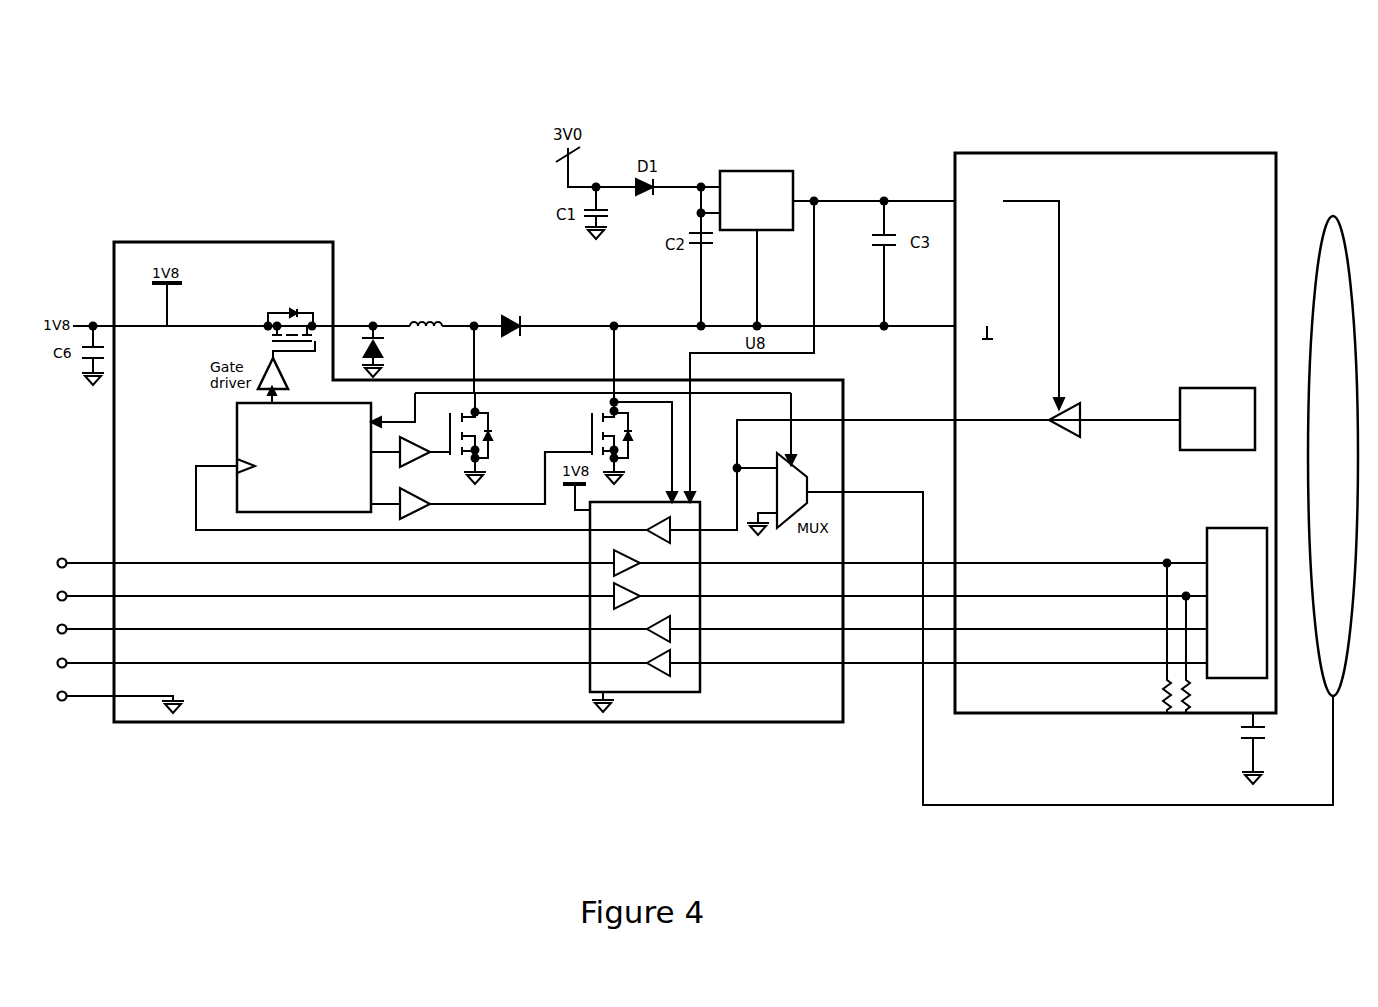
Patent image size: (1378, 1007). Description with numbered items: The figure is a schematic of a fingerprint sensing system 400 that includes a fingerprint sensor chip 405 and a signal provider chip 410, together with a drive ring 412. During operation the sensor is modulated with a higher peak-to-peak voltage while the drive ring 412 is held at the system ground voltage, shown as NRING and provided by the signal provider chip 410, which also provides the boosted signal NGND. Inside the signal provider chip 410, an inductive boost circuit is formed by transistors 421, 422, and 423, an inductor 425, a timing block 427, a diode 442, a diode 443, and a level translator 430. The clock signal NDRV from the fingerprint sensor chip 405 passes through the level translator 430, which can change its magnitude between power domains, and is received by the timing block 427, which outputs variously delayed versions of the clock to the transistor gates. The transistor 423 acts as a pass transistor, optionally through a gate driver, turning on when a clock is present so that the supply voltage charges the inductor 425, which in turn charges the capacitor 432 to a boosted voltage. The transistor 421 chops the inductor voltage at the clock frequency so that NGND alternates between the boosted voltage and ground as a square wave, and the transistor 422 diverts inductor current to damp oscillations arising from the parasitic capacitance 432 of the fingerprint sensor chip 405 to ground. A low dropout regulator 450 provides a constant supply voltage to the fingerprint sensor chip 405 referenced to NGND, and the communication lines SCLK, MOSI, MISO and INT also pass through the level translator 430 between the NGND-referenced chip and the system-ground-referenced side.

The fingerprint sensing system 400 is at (1221, 57).
The fingerprint sensor chip 405 is at (1092, 713).
The signal provider chip 410 is at (285, 242).
The drive ring 412 is at (1333, 456).
The transistor 421 is at (583, 425).
The transistor 422 is at (450, 462).
The transistor 423 is at (282, 312).
The inductor 425 is at (441, 320).
The timing block 427 is at (307, 457).
The level translator 430 is at (700, 680).
The capacitor 432 is at (1240, 740).
The diode 442 is at (385, 348).
The diode 443 is at (515, 316).
The low dropout regulator 450 is at (793, 171).